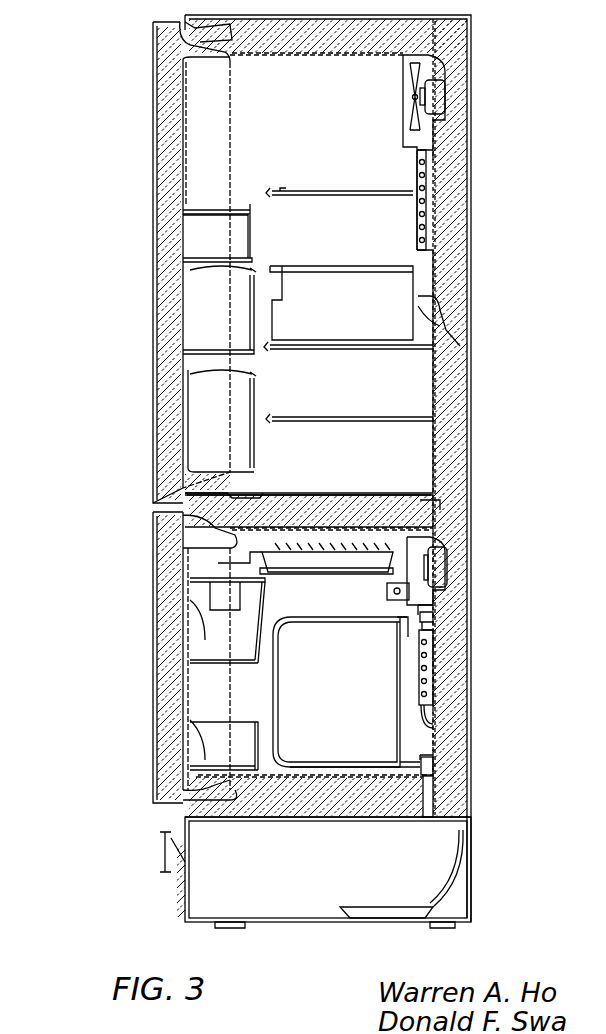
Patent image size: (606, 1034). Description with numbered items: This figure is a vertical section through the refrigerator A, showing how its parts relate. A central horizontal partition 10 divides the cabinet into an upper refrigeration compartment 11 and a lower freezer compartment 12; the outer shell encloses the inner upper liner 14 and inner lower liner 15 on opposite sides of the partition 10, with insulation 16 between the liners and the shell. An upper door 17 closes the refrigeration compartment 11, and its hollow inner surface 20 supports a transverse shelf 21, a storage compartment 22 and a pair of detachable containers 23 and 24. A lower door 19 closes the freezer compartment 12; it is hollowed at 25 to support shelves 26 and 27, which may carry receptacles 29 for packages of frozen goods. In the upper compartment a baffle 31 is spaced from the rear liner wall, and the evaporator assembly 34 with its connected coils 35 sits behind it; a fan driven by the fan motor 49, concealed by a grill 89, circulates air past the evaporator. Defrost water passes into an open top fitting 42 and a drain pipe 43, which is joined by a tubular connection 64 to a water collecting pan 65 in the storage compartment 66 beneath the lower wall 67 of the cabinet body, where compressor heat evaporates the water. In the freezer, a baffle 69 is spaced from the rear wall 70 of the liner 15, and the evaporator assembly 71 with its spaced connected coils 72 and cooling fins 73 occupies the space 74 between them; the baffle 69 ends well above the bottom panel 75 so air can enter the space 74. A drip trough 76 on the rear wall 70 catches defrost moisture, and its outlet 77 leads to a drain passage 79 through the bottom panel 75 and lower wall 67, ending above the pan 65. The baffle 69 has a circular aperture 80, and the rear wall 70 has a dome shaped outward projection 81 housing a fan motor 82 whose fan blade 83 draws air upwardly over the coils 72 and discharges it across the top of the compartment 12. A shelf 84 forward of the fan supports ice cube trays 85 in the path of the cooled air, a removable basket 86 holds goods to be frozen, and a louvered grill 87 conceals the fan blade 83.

The central horizontal partition 10 is at (336, 492).
The upper refrigeration compartment 11 is at (287, 160).
The lower freezer compartment 12 is at (332, 710).
The inner upper liner 14 is at (440, 440).
The inner lower liner 15 is at (440, 770).
The insulation 16 is at (450, 666).
The upper door 17 is at (153, 272).
The lower door 19 is at (153, 665).
The hollow inner surface of upper door 20 is at (183, 100).
The transverse shelf 21 is at (205, 207).
The storage compartment 22 is at (205, 252).
The detachable container 23 is at (190, 325).
The detachable container 24 is at (186, 405).
The hollow inner surface of lower door 25 is at (190, 755).
The shelf 26 is at (205, 645).
The shelf 27 is at (205, 725).
The receptacle 29 is at (200, 588).
The baffle 31 is at (417, 220).
The evaporator assembly 34 is at (444, 193).
The connected coils 35 is at (425, 227).
The open top fitting 42 is at (440, 308).
The drain pipe 43 is at (452, 318).
The fan motor 49 is at (437, 93).
The tubular connection 64 is at (440, 395).
The water collecting pan 65 is at (393, 915).
The storage compartment 66 is at (310, 905).
The lower wall of cabinet body 67 is at (300, 795).
The baffle 69 is at (430, 617).
The rear wall of lower liner 70 is at (436, 630).
The evaporator assembly 71 is at (432, 723).
The spaced connected coils 72 is at (444, 696).
The cooling fins 73 is at (425, 650).
The space 74 is at (425, 608).
The bottom panel of freezer compartment 75 is at (343, 790).
The drip trough 76 is at (433, 757).
The outlet 77 is at (432, 773).
The drain passage 79 is at (425, 803).
The circular aperture 80 is at (433, 525).
The dome shaped outward projection 81 is at (440, 537).
The fan motor 82 is at (437, 568).
The fan blade 83 is at (398, 582).
The shelf 84 is at (300, 566).
The ice cube trays 85 is at (330, 562).
The removable basket 86 is at (360, 762).
The louvered grill 87 is at (408, 606).
The grill 89 is at (403, 113).
The refrigerator A is at (141, 433).